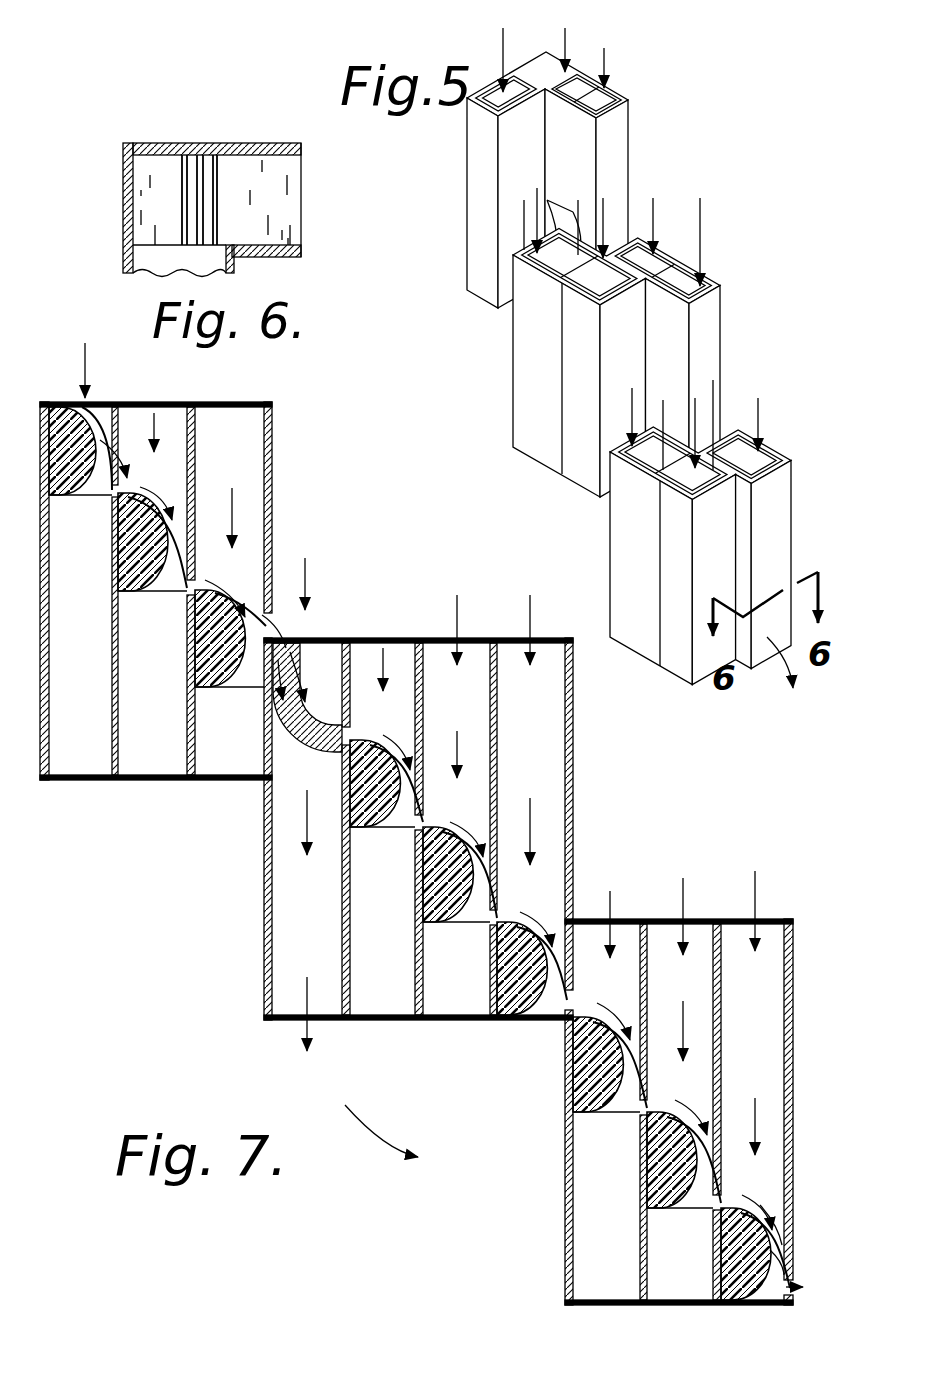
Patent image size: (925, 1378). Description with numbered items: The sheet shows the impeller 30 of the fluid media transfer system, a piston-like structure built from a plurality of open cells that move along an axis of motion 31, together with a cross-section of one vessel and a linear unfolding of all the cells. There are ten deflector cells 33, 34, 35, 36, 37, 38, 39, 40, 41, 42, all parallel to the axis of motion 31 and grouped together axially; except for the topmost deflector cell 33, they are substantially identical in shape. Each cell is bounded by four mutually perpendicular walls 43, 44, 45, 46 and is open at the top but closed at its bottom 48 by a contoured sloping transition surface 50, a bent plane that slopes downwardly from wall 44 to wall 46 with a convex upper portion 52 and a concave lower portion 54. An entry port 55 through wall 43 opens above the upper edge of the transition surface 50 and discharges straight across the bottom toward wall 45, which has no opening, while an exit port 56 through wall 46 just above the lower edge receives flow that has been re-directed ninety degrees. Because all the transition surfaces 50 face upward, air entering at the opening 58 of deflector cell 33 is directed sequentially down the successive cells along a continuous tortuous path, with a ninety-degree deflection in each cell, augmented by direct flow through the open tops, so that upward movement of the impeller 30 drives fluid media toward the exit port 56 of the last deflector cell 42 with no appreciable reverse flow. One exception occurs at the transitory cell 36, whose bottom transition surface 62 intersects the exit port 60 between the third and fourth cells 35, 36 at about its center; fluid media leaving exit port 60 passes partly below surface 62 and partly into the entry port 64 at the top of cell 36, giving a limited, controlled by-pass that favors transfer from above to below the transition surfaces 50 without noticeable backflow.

In FIG. 5, the impeller 30 is at (561, 481).
In FIG. 7, the impeller 30 is at (262, 866).
In FIG. 5, the axis of motion 31 is at (524, 20).
In FIG. 5, the deflector cell 33 is at (467, 112).
In FIG. 7, the deflector cell 33 is at (98, 405).
In FIG. 5, the deflector cell 34 is at (585, 75).
In FIG. 7, the deflector cell 34 is at (172, 420).
In FIG. 5, the deflector cell 35 is at (582, 108).
In FIG. 7, the deflector cell 35 is at (258, 442).
In FIG. 5, the deflector cell 36 is at (520, 300).
In FIG. 7, the deflector cell 36 is at (327, 655).
In FIG. 5, the deflector cell 37 is at (575, 315).
In FIG. 7, the deflector cell 37 is at (400, 655).
In FIG. 5, the deflector cell 38 is at (677, 290).
In FIG. 7, the deflector cell 38 is at (472, 657).
In FIG. 5, the deflector cell 39 is at (705, 296).
In FIG. 7, the deflector cell 39 is at (543, 660).
In FIG. 5, the deflector cell 40 is at (650, 465).
In FIG. 7, the deflector cell 40 is at (628, 937).
In FIG. 5, the deflector cell 41 is at (685, 480).
In FIG. 6, the deflector cell 41 is at (140, 272).
In FIG. 7, the deflector cell 41 is at (698, 940).
In FIG. 5, the deflector cell 42 is at (775, 445).
In FIG. 6, the deflector cell 42 is at (303, 205).
In FIG. 7, the deflector cell 42 is at (767, 947).
In FIG. 6, the wall 43 is at (290, 262).
In FIG. 7, the wall 43 is at (132, 438).
In FIG. 6, the wall 44 is at (123, 218).
In FIG. 6, the wall 45 is at (213, 145).
In FIG. 6, the wall 46 is at (303, 185).
In FIG. 7, the wall 46 is at (793, 1040).
In FIG. 7, the bottom 48 is at (760, 1305).
In FIG. 6, the transition surface 50 is at (153, 170).
In FIG. 7, the transition surface 50 is at (88, 498).
In FIG. 7, the upper portion 52 is at (792, 1203).
In FIG. 7, the lower portion 54 is at (793, 1245).
In FIG. 6, the entry port 55 is at (165, 273).
In FIG. 6, the exit port 56 is at (293, 233).
In FIG. 7, the exit port 56 is at (800, 1270).
In FIG. 7, the opening 58 is at (78, 398).
In FIG. 5, the exit port 60 is at (572, 226).
In FIG. 7, the exit port 60 is at (282, 600).
In FIG. 7, the bottom transition surface 62 is at (327, 737).
In FIG. 7, the entry port 64 is at (322, 622).